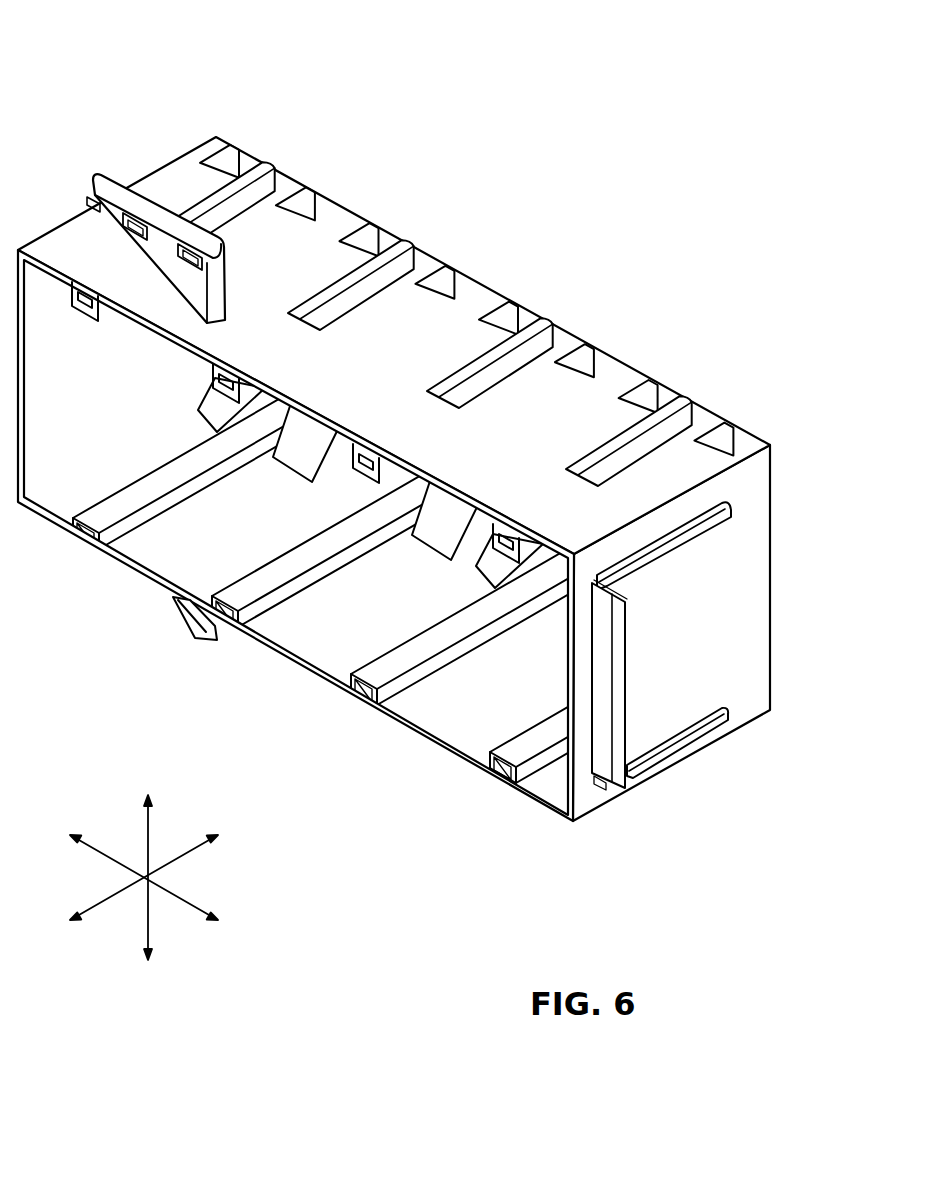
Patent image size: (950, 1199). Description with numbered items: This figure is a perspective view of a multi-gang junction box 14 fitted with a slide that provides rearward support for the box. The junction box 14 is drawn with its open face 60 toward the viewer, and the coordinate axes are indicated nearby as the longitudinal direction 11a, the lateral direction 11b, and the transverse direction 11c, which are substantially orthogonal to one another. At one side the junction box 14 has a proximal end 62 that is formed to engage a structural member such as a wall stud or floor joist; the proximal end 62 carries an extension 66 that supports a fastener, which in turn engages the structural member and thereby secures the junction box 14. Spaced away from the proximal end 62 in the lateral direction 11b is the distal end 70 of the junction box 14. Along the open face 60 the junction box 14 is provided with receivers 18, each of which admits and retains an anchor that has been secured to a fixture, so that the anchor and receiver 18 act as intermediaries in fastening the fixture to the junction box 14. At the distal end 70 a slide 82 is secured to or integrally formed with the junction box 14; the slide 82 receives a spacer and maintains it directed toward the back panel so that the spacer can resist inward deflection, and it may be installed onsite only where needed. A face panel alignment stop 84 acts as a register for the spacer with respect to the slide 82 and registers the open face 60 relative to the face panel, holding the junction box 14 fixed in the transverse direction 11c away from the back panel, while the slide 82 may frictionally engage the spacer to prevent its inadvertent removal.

The proximal end 62 is at (84, 106).
The junction box 14 is at (529, 183).
The extension 66 is at (145, 203).
The receiver 18 is at (78, 306).
The open face 60 is at (462, 768).
The slide 82 is at (704, 528).
The face panel alignment stop 84 is at (607, 665).
The distal end 70 is at (684, 638).
The longitudinal direction 11a is at (152, 812).
The lateral direction 11b is at (183, 928).
The transverse direction 11c is at (190, 856).